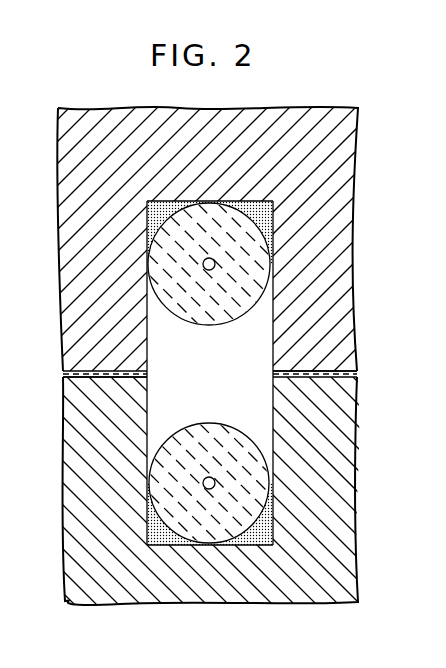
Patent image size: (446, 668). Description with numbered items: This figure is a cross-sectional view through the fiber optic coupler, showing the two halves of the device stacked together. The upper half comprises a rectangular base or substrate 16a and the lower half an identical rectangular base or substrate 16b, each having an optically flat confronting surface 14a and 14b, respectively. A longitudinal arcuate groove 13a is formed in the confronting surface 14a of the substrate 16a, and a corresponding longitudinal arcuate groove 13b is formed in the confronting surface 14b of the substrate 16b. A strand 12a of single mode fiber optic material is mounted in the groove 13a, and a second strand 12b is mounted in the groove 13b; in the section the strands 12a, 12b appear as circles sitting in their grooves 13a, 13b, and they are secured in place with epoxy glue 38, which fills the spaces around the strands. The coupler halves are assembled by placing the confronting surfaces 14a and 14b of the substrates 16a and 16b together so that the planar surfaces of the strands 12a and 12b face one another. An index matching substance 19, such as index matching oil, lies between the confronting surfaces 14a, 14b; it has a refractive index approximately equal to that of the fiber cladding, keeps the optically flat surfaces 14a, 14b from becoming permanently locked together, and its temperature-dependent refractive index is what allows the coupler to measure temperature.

The strand of single mode fiber optic material 12a is at (240, 273).
The strand of single mode fiber optic material 12b is at (247, 498).
The longitudinal arcuate groove 13a is at (150, 352).
The longitudinal arcuate groove 13b is at (268, 400).
The optically flat confronting surface 14a is at (79, 397).
The optically flat confronting surface 14b is at (341, 363).
The rectangular base or substrate 16a is at (322, 108).
The rectangular base or substrate 16b is at (317, 598).
The index matching substance 19 is at (64, 368).
The epoxy glue 38 is at (158, 201).